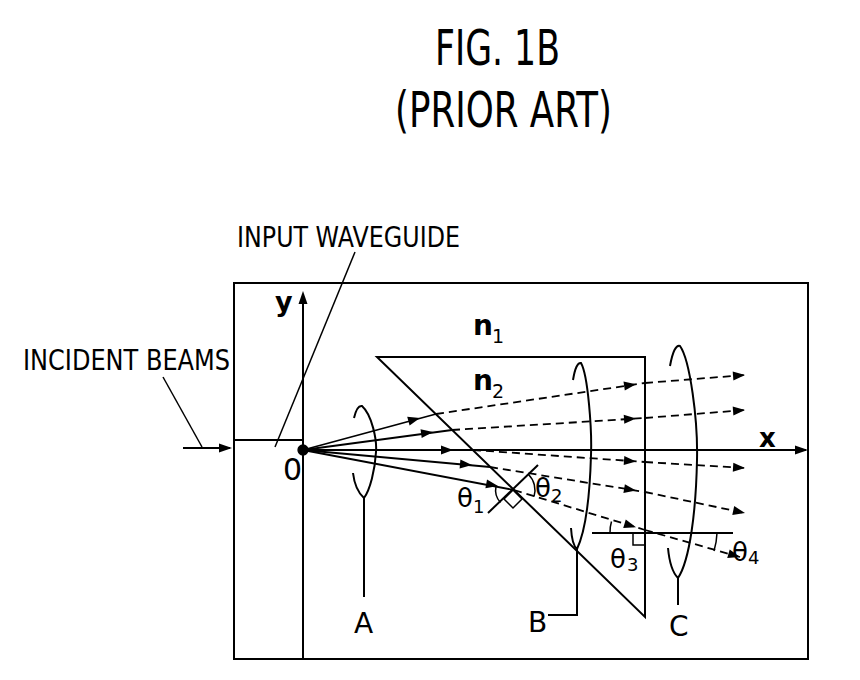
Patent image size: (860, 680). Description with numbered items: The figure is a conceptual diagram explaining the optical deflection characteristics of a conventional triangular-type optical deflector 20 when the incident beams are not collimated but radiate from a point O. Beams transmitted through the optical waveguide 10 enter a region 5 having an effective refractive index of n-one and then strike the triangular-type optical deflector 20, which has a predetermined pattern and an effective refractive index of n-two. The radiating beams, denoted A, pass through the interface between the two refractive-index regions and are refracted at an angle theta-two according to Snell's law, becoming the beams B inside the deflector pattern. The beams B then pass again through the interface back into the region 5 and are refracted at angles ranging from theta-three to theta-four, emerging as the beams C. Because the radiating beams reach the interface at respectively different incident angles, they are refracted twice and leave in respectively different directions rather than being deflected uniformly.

The region 5 is at (250, 609).
The optical waveguide 10 is at (252, 445).
The triangular-type optical deflector 20 is at (543, 383).